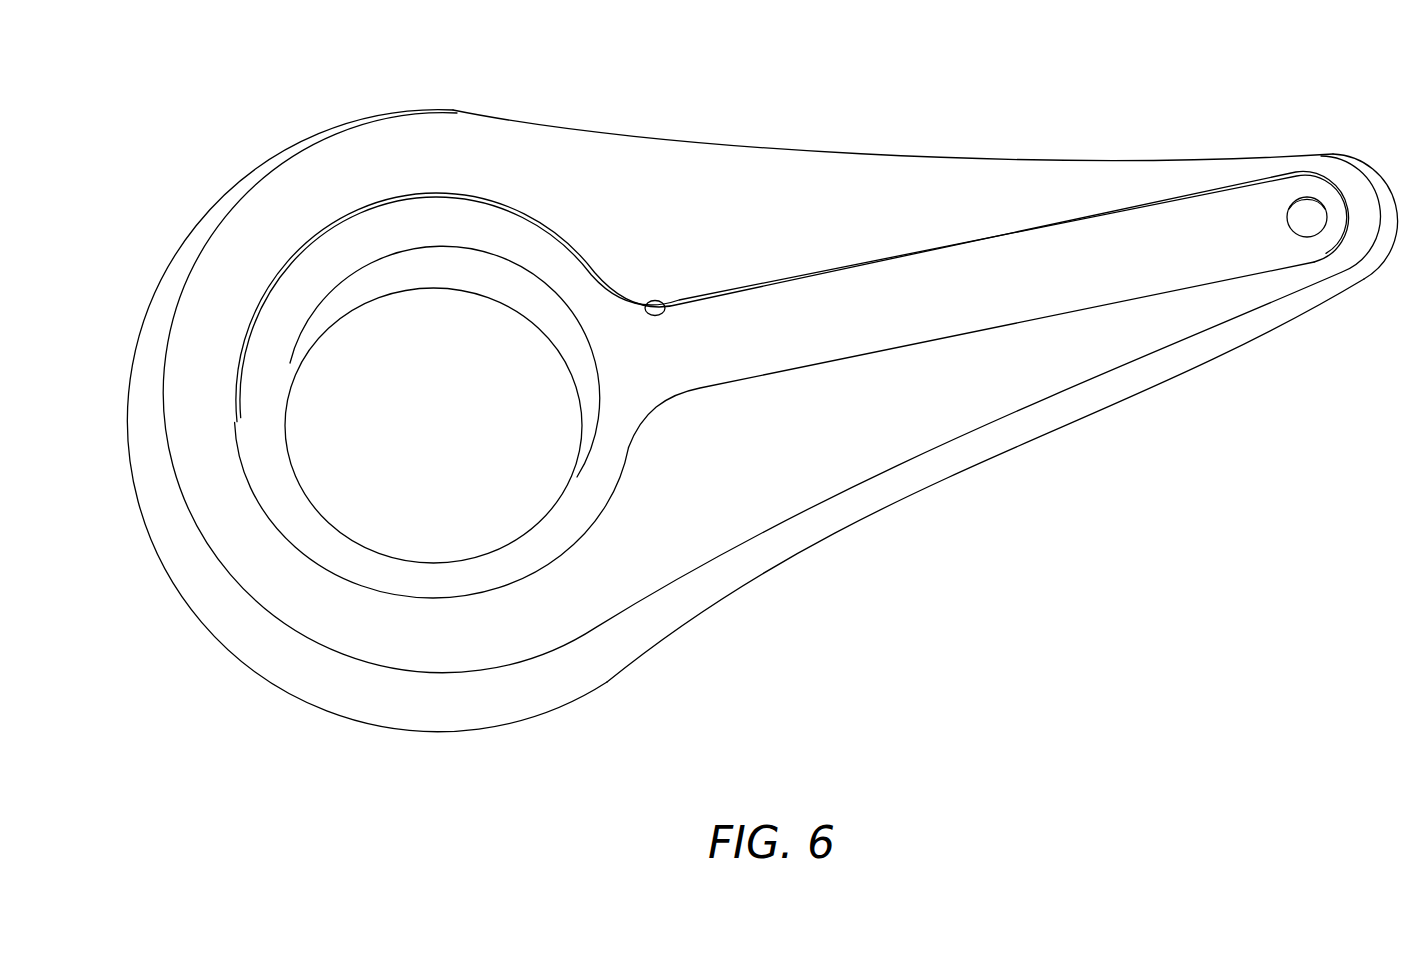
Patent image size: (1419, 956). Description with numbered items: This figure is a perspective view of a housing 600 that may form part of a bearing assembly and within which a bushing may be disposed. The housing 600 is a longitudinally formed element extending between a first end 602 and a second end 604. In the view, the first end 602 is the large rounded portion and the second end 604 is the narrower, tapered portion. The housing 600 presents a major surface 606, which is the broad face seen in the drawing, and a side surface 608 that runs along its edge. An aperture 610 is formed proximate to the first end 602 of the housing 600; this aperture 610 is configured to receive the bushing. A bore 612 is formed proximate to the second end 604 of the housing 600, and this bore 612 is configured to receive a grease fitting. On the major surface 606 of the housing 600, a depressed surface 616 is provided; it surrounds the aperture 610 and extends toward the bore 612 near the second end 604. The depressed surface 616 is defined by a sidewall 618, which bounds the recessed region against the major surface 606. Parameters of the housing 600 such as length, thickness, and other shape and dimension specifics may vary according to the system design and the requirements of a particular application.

The housing 600 is at (729, 140).
The first end 602 is at (226, 154).
The second end 604 is at (1327, 126).
The major surface 606 is at (849, 446).
The side surface 608 is at (778, 556).
The aperture 610 is at (439, 438).
The bore 612 is at (1308, 221).
The depressed surface 616 is at (1028, 294).
The sidewall 618 is at (660, 303).